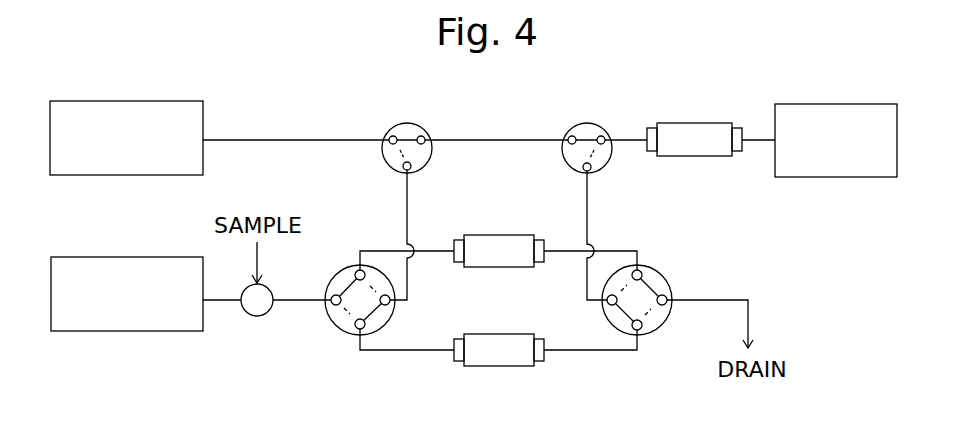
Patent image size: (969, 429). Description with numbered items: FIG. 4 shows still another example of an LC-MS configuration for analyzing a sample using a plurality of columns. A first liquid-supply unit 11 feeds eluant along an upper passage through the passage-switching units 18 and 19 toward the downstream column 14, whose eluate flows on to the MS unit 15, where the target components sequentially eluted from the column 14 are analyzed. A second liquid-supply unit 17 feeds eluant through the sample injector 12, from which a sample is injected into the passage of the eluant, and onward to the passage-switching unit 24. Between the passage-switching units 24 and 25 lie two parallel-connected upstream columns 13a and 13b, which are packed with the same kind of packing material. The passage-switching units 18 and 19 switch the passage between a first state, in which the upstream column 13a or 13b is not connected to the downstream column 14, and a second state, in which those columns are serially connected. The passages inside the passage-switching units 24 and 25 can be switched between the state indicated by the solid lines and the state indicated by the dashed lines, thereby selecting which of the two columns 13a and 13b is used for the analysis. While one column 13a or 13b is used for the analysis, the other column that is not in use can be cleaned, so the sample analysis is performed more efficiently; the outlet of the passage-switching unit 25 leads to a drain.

The first liquid-supply unit 11 is at (142, 175).
The second liquid-supply unit 17 is at (144, 331).
The sample injector 12 is at (251, 315).
The passage-switching unit 18 is at (410, 125).
The passage-switching unit 19 is at (592, 125).
The column 14 is at (698, 156).
The MS unit 15 is at (840, 177).
The column 13a is at (503, 233).
The column 13b is at (502, 367).
The passage-switching unit 24 is at (342, 270).
The passage-switching unit 25 is at (664, 274).